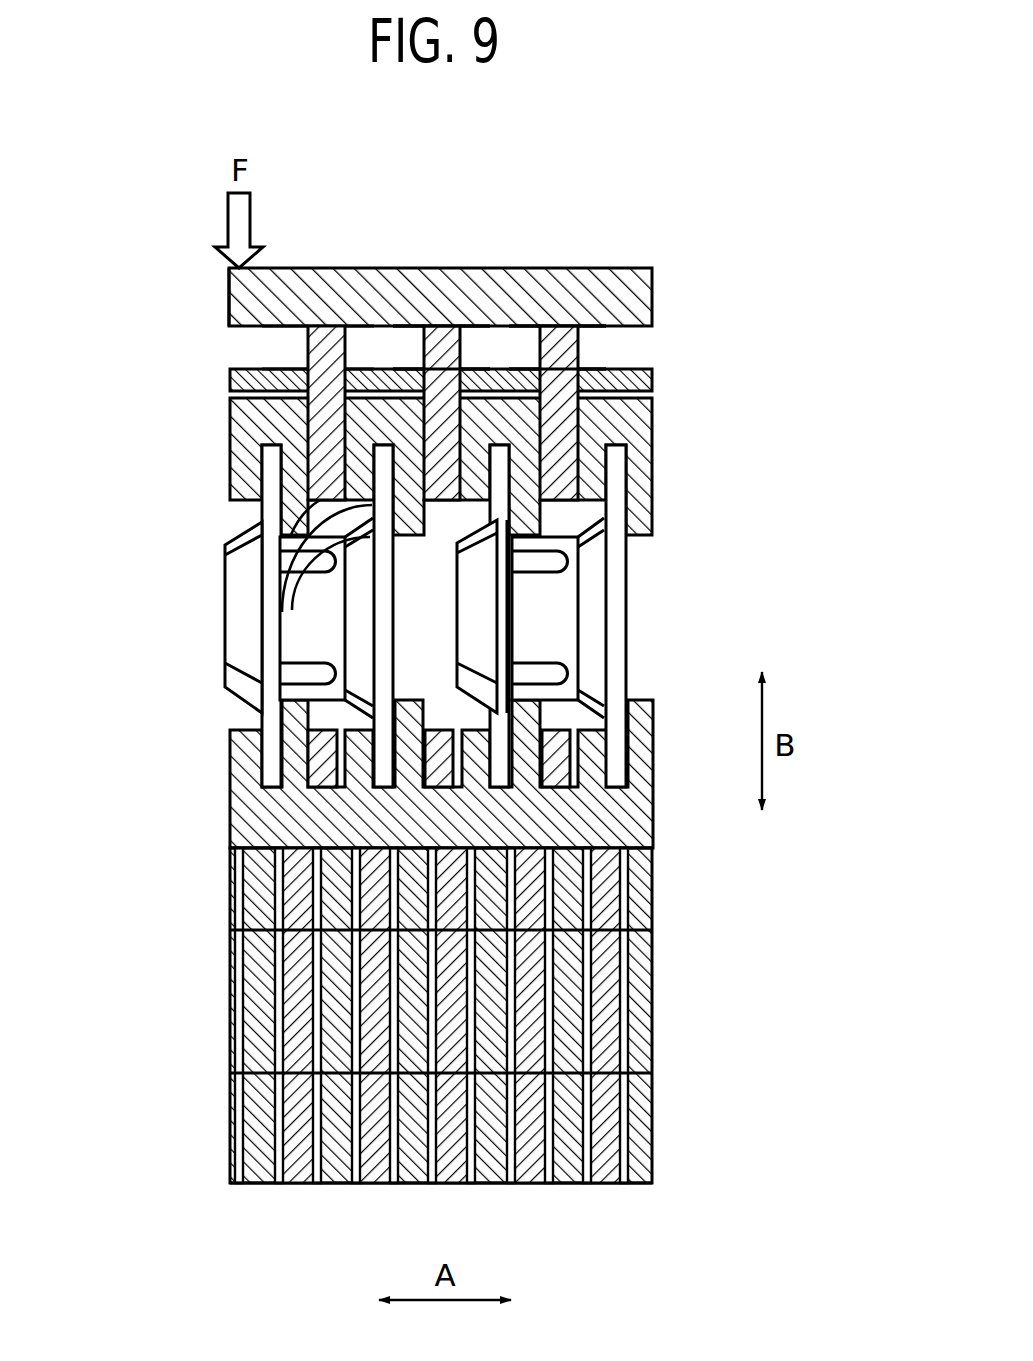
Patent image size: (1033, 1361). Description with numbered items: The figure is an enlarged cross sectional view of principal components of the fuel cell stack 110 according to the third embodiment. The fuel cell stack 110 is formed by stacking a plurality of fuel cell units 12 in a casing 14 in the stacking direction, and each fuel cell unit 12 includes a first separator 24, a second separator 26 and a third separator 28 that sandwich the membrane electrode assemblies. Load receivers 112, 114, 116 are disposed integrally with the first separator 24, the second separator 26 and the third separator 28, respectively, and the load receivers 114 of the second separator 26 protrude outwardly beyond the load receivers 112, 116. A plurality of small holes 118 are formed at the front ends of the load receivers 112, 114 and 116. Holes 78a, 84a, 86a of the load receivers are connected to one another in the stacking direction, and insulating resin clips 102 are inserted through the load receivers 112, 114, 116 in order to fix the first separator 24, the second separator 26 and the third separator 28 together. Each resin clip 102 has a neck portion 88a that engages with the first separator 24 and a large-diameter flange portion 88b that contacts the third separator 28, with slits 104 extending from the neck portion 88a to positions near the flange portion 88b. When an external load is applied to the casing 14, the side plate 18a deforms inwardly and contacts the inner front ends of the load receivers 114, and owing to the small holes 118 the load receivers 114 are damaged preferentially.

The fuel cell stack 110 is at (650, 102).
The casing 14 is at (636, 262).
The side plate 18a is at (247, 303).
The fuel cell unit 12 is at (487, 186).
The first separator 24 is at (403, 366).
The second separator 26 is at (438, 324).
The third separator 28 is at (477, 366).
The load receiver 112 is at (288, 366).
The load receiver 114 is at (323, 324).
The load receiver 116 is at (362, 366).
The small hole 118 is at (643, 395).
The resin clip 102 is at (231, 530).
The hole 78a is at (262, 550).
The hole 84a is at (262, 583).
The hole 86a is at (262, 615).
The neck portion 88a is at (245, 642).
The flange portion 88b is at (388, 548).
The slit 104 is at (550, 667).